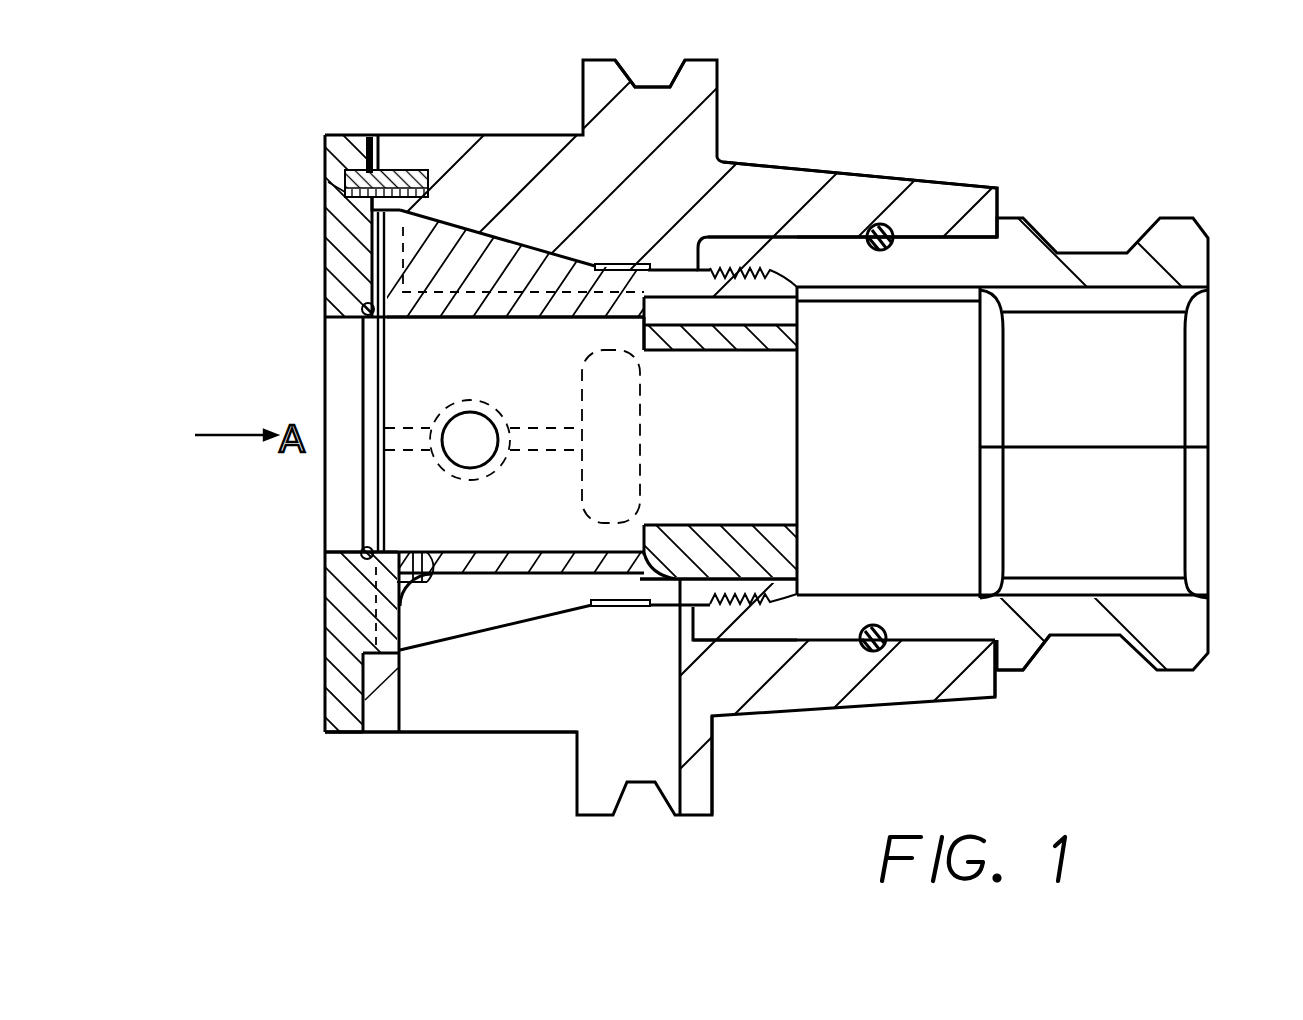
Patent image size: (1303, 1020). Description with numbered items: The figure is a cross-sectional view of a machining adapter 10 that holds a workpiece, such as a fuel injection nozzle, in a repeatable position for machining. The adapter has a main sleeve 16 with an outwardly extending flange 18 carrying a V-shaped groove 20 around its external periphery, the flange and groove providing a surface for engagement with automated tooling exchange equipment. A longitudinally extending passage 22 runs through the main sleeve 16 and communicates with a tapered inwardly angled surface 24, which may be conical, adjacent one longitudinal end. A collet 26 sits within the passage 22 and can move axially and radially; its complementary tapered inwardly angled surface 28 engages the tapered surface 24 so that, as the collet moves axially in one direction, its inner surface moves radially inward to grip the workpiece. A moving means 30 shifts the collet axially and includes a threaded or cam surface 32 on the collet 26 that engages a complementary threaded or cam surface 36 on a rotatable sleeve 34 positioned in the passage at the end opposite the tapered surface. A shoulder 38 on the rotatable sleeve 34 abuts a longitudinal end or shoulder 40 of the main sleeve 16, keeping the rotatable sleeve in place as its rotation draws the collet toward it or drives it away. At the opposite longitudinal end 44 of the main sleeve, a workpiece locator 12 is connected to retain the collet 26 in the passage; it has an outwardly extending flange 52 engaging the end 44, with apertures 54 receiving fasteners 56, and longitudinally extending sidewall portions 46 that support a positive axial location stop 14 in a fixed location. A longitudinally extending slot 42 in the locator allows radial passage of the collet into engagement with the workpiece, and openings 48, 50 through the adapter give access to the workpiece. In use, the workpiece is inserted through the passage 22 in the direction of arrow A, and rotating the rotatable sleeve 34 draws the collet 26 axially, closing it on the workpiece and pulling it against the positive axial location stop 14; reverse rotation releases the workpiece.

The machining adapter 10 is at (1058, 97).
The workpiece locator 12 is at (300, 583).
The positive axial location stop 14 is at (605, 528).
The main sleeve 16 is at (527, 147).
The outwardly extending flange 18 is at (703, 88).
The V-shaped groove 20 is at (637, 70).
The longitudinally extending passage 22 is at (782, 630).
The tapered inwardly angled surface 24 is at (490, 617).
The collet 26 is at (448, 232).
The complementary tapered inwardly angled surface 28 is at (508, 235).
The moving means 30 is at (768, 252).
The threaded or cam surface 32 is at (797, 287).
The rotatable sleeve 34 is at (1027, 248).
The complementary threaded or cam surface 36 is at (748, 300).
The shoulder 38 is at (992, 212).
The shoulder 40 is at (997, 682).
The longitudinally extending slot 42 is at (362, 600).
The longitudinal end 44 is at (322, 733).
The longitudinally extending sidewall portions 46 is at (540, 568).
The opening 48 is at (455, 425).
The opening 50 is at (430, 598).
The outwardly extending flange 52 is at (330, 678).
The aperture 54 is at (327, 180).
The fastener 56 is at (328, 165).